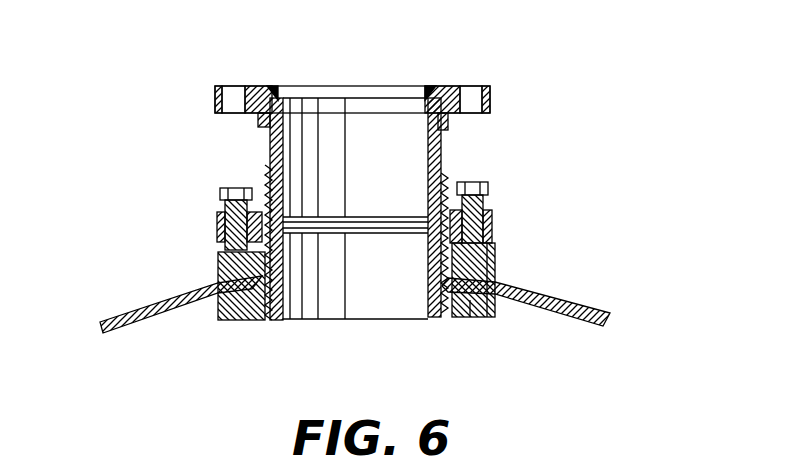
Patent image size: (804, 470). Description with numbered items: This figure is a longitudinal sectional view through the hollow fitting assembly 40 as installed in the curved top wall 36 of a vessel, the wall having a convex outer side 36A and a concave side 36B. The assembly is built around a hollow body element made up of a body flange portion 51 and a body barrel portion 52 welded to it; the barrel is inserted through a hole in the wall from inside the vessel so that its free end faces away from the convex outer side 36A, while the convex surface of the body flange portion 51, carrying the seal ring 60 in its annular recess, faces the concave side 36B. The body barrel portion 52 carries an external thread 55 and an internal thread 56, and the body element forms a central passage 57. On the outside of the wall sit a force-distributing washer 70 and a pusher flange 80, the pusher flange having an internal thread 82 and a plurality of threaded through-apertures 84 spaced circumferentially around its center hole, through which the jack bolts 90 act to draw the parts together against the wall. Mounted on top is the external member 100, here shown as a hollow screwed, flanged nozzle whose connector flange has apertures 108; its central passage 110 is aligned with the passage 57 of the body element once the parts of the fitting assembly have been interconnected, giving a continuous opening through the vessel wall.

The hollow fitting assembly 40 is at (610, 113).
The external member 100 is at (214, 92).
The apertures 108 is at (470, 92).
The central passage 110 is at (328, 130).
The central passage 57 is at (330, 295).
The body barrel portion 52 is at (437, 320).
The external thread 55 is at (268, 185).
The internal thread 56 is at (446, 185).
The jack bolts 90 is at (216, 201).
The pusher flange 80 is at (216, 229).
The internal thread 82 is at (481, 205).
The threaded through-apertures 84 is at (484, 231).
The force-distributing washer 70 is at (497, 263).
The body flange portion 51 is at (487, 318).
The seal ring 60 is at (470, 317).
The top wall 36 is at (593, 302).
The convex outer side 36A is at (117, 320).
The concave side 36B is at (150, 320).